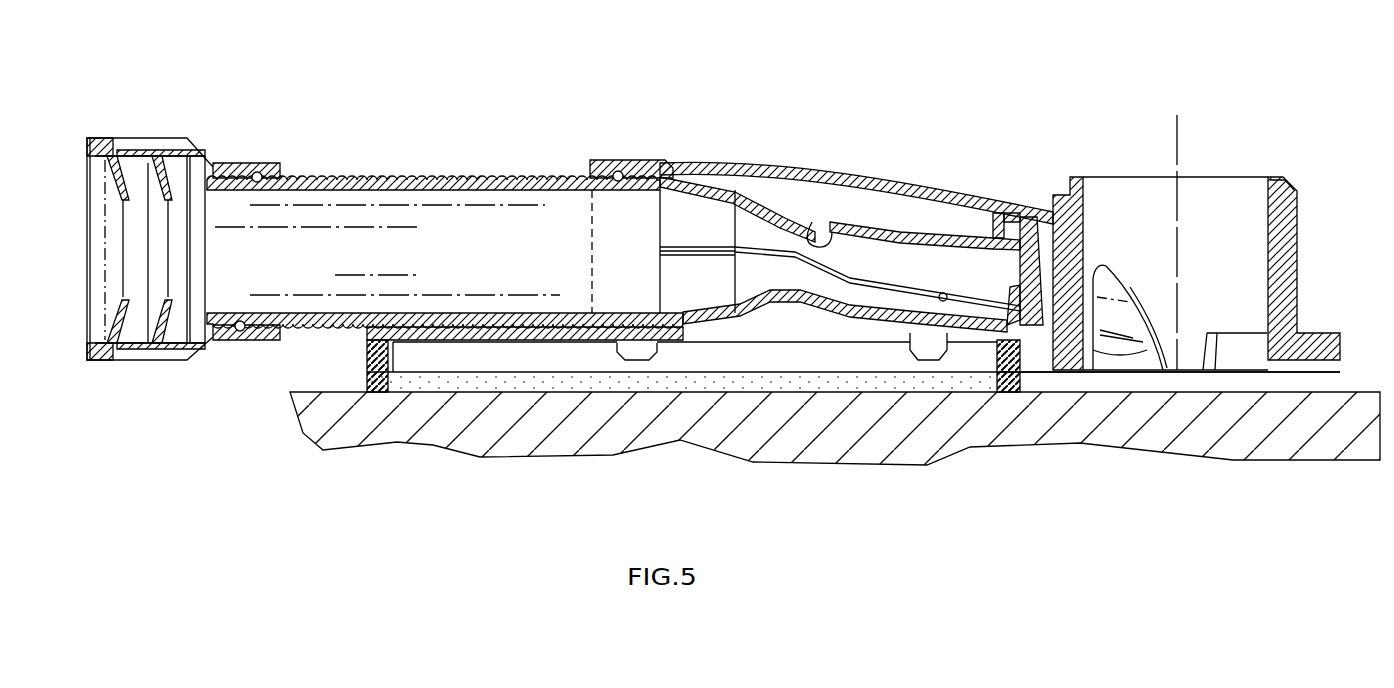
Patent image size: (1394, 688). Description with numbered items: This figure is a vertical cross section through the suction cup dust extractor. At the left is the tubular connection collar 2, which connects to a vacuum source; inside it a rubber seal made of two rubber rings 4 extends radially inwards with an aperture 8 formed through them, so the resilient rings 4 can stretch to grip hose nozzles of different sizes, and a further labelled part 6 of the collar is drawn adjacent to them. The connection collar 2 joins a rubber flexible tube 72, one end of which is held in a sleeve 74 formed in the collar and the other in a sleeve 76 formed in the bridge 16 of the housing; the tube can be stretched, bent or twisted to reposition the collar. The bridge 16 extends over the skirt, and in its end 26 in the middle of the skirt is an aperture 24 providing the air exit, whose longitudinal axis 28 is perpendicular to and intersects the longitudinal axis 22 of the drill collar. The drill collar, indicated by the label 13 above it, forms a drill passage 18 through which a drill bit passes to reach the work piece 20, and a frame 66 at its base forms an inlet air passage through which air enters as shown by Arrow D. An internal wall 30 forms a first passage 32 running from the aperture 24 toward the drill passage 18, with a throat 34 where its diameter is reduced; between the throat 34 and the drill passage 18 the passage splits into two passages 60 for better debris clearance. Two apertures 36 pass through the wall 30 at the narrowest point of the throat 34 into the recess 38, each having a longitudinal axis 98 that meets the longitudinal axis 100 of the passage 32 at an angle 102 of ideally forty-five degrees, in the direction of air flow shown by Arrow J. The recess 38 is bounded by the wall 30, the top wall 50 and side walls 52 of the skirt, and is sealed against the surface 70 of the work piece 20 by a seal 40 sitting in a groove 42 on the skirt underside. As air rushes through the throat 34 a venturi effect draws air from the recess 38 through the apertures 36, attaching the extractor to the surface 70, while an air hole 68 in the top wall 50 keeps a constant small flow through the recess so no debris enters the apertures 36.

The connection collar 2 is at (172, 143).
The rubber rings 4 is at (160, 320).
The cap top wall 6 is at (115, 150).
The aperture 8 is at (160, 270).
The housing 13 is at (1107, 162).
The bridge 16 is at (880, 170).
The drill passage 18 is at (1211, 245).
The work piece 20 is at (1090, 420).
The longitudinal axis 22 is at (1173, 292).
The aperture 24 is at (590, 227).
The end 26 is at (592, 163).
The longitudinal axis 28 is at (430, 252).
The internal wall 30 is at (738, 195).
The first passage 32 is at (686, 229).
The throat 34 is at (815, 222).
The apertures 36 is at (825, 305).
The recess 38 is at (724, 359).
The seal 40 is at (373, 392).
The groove 42 is at (375, 345).
The top wall 50 is at (430, 340).
The side walls 52 is at (365, 357).
The passages 60 is at (1117, 318).
The frame 66 is at (1323, 343).
The air hole 68 is at (557, 337).
The surface 70 is at (1250, 385).
The flexible tube 72 is at (425, 178).
The sleeve 74 is at (257, 170).
The sleeve 76 is at (618, 172).
The longitudinal axis 98 is at (848, 245).
The longitudinal axis 100 is at (943, 293).
The angle 102 is at (855, 305).
The Arrow D is at (1266, 357).
The Arrow J is at (795, 269).